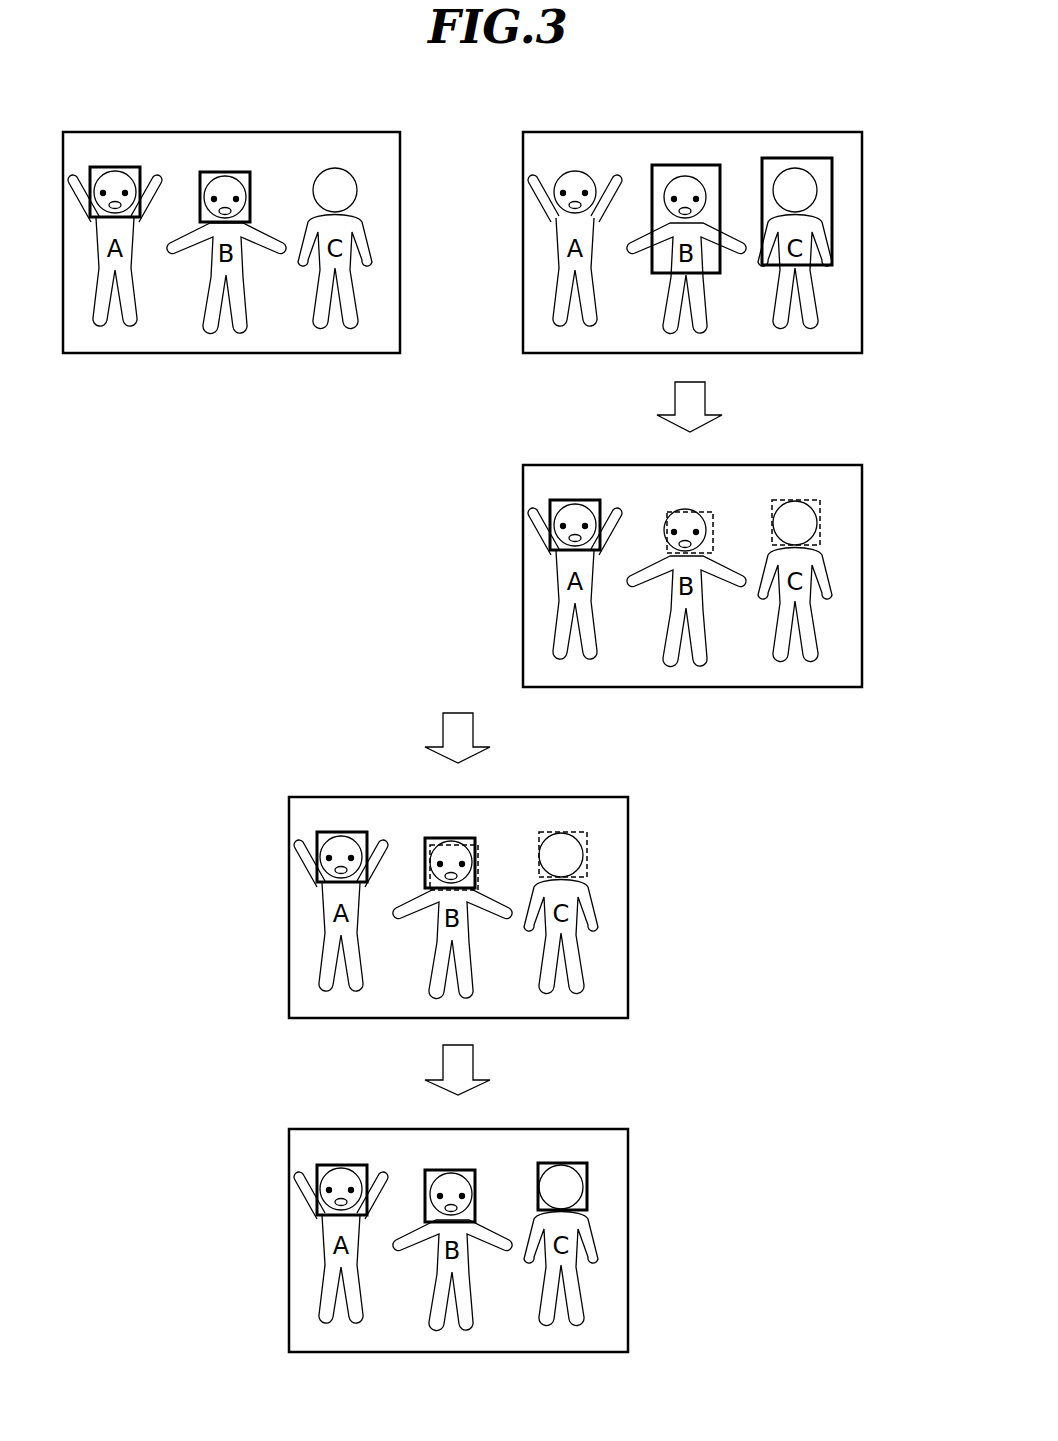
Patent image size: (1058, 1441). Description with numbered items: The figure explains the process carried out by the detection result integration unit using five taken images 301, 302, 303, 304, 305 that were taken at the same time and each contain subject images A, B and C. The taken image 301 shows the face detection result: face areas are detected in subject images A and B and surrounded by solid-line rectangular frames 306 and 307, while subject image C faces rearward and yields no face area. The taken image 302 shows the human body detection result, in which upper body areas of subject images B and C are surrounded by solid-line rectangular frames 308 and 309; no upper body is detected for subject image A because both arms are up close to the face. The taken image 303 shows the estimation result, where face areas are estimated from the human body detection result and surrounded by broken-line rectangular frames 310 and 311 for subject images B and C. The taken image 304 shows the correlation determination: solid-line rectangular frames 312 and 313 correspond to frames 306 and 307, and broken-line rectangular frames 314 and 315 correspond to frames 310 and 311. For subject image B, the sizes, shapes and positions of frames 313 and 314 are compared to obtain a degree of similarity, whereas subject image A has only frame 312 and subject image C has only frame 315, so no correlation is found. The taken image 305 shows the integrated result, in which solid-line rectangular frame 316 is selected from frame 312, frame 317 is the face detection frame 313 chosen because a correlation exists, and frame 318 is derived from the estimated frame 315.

The taken image 301 is at (400, 209).
The taken image 302 is at (862, 209).
The taken image 303 is at (862, 543).
The taken image 304 is at (628, 875).
The taken image 305 is at (628, 1207).
The solid-line rectangular frame 306 is at (115, 167).
The solid-line rectangular frame 307 is at (226, 172).
The solid-line rectangular frame 308 is at (687, 165).
The solid-line rectangular frame 309 is at (795, 158).
The broken-line rectangular frame 310 is at (705, 512).
The broken-line rectangular frame 311 is at (810, 500).
The solid-line rectangular frame 312 is at (338, 832).
The solid-line rectangular frame 313 is at (433, 838).
The broken-line rectangular frame 314 is at (480, 848).
The broken-line rectangular frame 315 is at (580, 832).
The solid-line rectangular frame 316 is at (338, 1165).
The solid-line rectangular frame 317 is at (433, 1170).
The solid-line rectangular frame 318 is at (580, 1163).